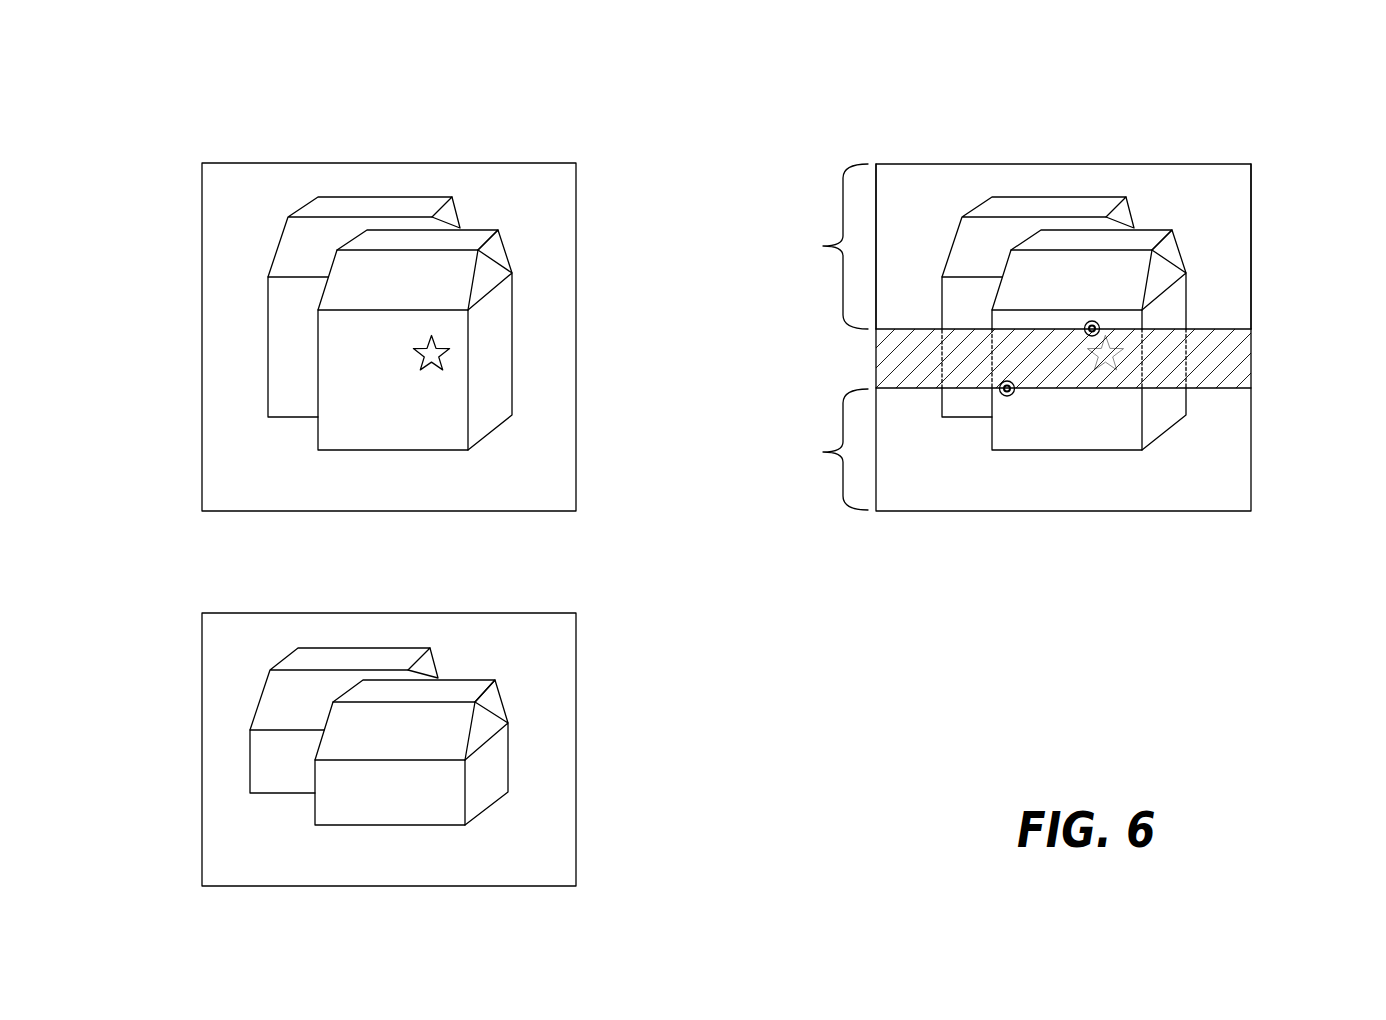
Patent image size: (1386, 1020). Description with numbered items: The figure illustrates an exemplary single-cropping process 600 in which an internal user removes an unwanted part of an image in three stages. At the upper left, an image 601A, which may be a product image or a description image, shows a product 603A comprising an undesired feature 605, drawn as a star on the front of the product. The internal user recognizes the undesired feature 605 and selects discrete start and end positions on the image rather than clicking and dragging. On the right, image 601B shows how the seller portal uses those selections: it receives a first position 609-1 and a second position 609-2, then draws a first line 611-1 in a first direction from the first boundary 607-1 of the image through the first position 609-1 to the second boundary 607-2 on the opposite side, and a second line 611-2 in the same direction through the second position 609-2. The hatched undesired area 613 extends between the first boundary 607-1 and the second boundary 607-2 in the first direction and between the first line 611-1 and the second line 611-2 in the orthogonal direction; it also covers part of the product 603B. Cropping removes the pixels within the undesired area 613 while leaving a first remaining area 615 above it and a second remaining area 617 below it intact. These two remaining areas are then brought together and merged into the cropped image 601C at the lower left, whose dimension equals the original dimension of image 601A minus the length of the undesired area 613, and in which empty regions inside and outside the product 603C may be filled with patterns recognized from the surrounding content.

The single-cropping process 600 is at (179, 80).
The image 601A is at (537, 163).
The image 601B is at (1218, 163).
The cropped image 601C is at (527, 613).
The product 603A is at (353, 197).
The product 603B is at (1027, 197).
The product 603C is at (360, 647).
The undesired feature 605 is at (450, 348).
The first boundary 607-1 is at (876, 215).
The second boundary 607-2 is at (1251, 223).
The first position 609-1 is at (1099, 325).
The second position 609-2 is at (1009, 396).
The first line 611-1 is at (1251, 328).
The second line 611-2 is at (1218, 388).
The undesired area 613 is at (1251, 363).
The first remaining area 615 is at (821, 246).
The second remaining area 617 is at (821, 449).